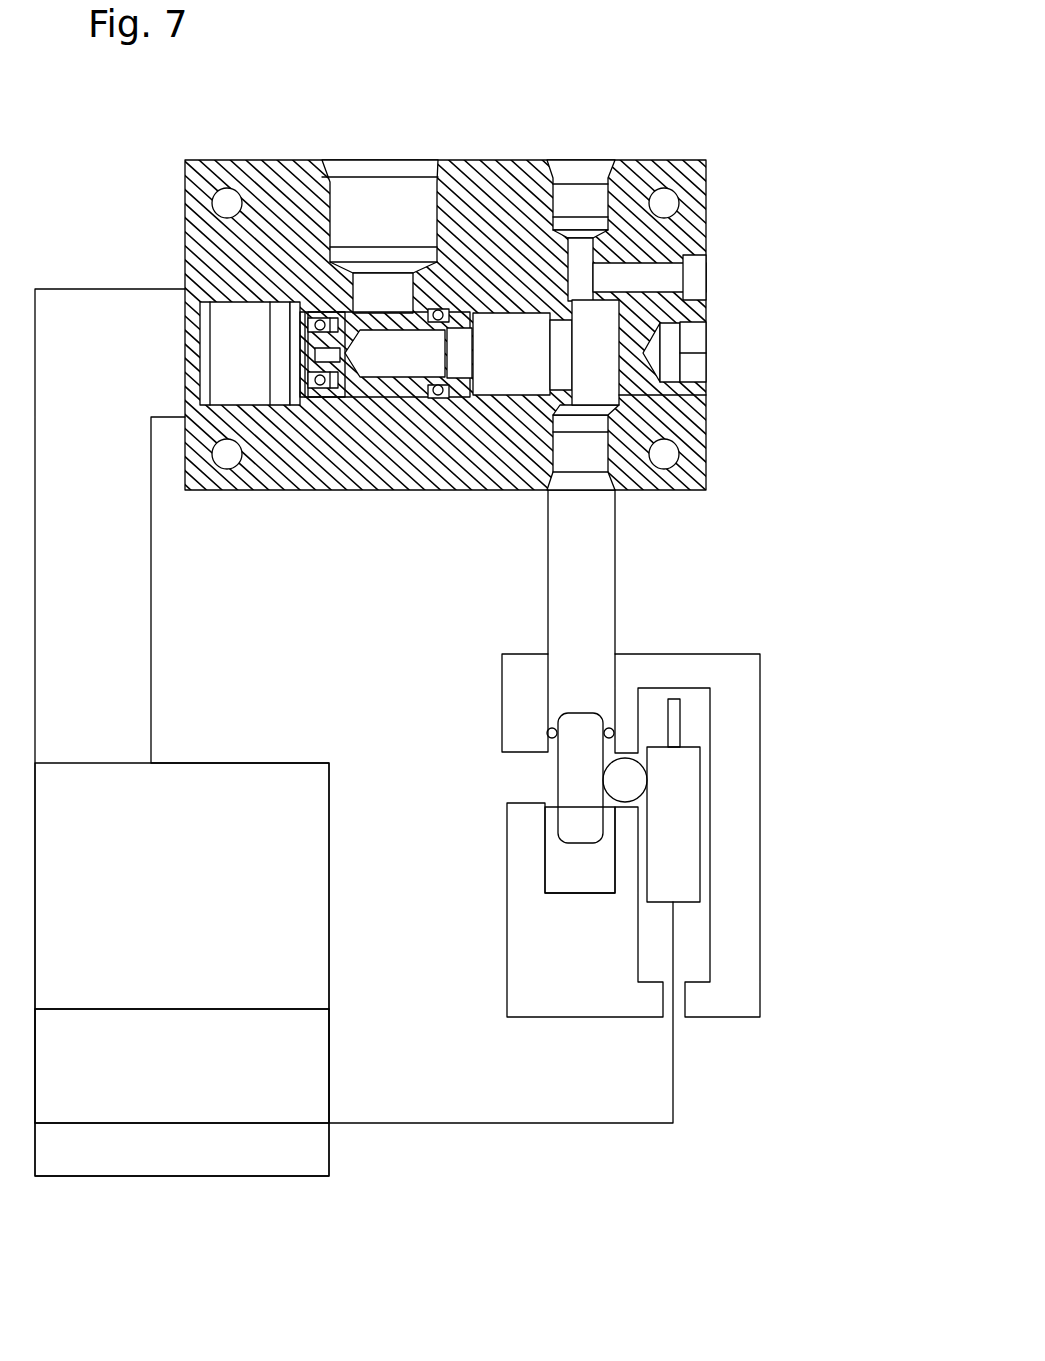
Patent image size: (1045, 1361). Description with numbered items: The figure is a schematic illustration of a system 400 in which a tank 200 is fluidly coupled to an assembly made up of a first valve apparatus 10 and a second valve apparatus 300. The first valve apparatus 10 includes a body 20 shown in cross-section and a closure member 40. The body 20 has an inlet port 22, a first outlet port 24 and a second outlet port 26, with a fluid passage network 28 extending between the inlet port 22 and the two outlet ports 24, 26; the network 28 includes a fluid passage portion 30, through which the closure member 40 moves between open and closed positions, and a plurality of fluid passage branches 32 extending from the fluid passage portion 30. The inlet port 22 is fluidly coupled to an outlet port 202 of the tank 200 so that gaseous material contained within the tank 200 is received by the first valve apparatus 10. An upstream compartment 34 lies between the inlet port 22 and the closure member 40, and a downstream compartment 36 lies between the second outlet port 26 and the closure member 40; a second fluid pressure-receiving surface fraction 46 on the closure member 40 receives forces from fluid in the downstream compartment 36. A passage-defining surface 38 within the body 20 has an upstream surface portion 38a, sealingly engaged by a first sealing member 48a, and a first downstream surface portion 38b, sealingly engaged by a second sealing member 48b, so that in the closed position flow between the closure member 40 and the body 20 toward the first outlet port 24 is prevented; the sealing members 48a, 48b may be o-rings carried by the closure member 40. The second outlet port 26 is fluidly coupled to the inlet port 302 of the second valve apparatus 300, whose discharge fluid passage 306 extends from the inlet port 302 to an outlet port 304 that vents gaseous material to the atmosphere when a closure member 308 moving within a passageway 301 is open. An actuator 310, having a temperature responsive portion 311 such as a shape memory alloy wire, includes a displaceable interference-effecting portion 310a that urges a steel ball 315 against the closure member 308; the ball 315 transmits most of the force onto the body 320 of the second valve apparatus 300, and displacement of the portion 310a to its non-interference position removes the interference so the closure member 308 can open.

The valve apparatus 10 is at (682, 128).
The body 20 is at (185, 175).
The inlet port 22 is at (185, 330).
The first outlet port 24 is at (368, 160).
The second outlet port 26 is at (597, 160).
The fluid passage network 28 is at (520, 335).
The fluid passage portion 30 is at (312, 395).
The fluid passage branches 32 is at (385, 270).
The upstream compartment 34 is at (231, 338).
The downstream compartment 36 is at (605, 365).
The passage-defining surface 38 is at (348, 390).
The upstream surface portion 38a is at (318, 322).
The first downstream surface portion 38b is at (438, 313).
The closure member 40 is at (328, 324).
The second fluid pressure-receiving surface fraction 46 is at (478, 395).
The first sealing member 48a is at (318, 385).
The second sealing member 48b is at (437, 392).
The tank 200 is at (292, 760).
The outlet port 202 is at (80, 773).
The second valve apparatus 300 is at (772, 758).
The passageway 301 is at (578, 878).
The inlet port 302 is at (568, 655).
The outlet port 304 is at (512, 782).
The discharge fluid passage 306 is at (586, 685).
The closure member 308 is at (575, 822).
The actuator 310 is at (684, 1078).
The displaceable interference-effecting portion 310a is at (690, 838).
The temperature responsive portion 311 is at (192, 1008).
The ball 315 is at (612, 778).
The body 320 is at (770, 893).
The system 400 is at (745, 147).